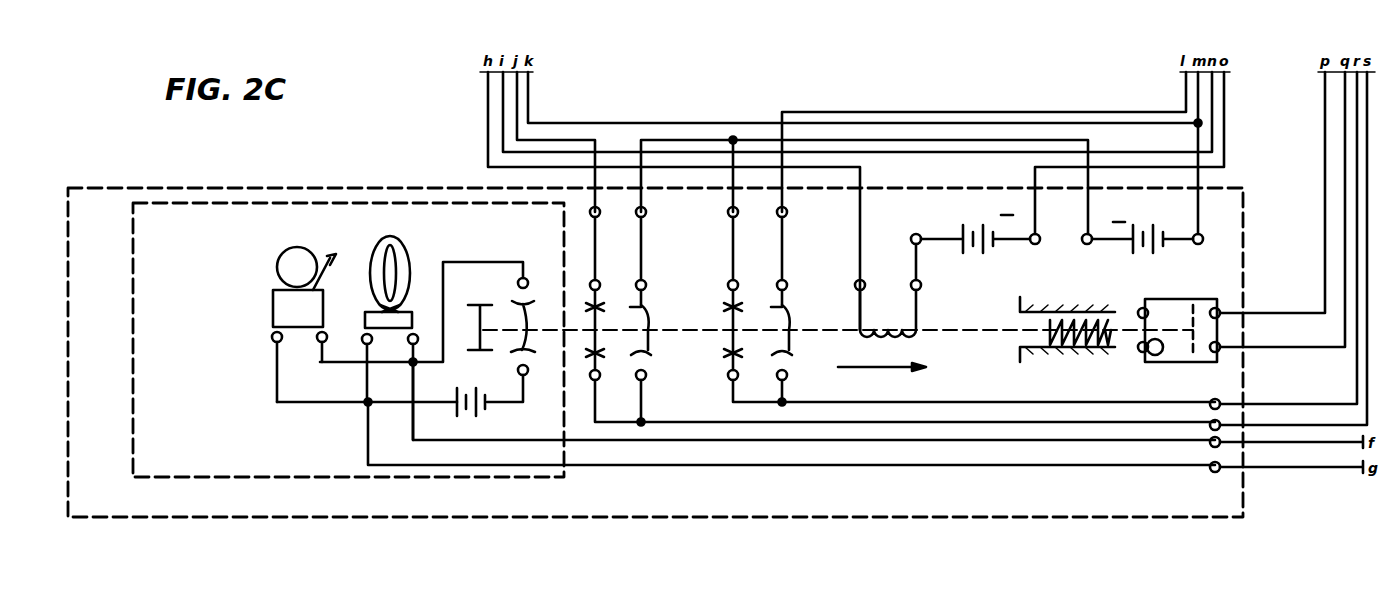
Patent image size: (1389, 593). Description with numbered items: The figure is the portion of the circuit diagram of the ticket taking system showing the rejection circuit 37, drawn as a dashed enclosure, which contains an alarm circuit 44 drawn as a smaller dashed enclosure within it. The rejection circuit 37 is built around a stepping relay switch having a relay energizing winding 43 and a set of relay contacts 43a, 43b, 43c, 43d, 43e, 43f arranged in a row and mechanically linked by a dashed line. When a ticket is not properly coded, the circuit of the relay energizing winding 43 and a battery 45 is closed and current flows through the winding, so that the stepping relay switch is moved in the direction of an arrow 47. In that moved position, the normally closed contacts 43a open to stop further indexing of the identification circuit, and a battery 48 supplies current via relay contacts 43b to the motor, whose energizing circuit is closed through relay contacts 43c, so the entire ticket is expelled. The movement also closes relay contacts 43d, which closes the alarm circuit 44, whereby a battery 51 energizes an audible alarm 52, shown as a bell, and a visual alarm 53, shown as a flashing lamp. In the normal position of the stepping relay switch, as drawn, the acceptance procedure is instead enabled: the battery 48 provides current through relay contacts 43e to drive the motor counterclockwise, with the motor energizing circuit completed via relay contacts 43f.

The rejection circuit 37 is at (415, 511).
The alarm circuit 44 is at (270, 469).
The audible alarm 52 is at (282, 262).
The visual alarm 53 is at (392, 238).
The battery 51 is at (476, 418).
The relay energizing winding 43 is at (887, 328).
The normally closed contacts 43a is at (1120, 343).
The relay contacts 43b is at (790, 306).
The relay contacts 43c is at (649, 306).
The relay contacts 43d is at (501, 326).
The relay contacts 43e is at (600, 343).
The relay contacts 43f is at (724, 348).
The battery 45 is at (975, 248).
The arrow 47 is at (893, 370).
The battery 48 is at (1160, 248).